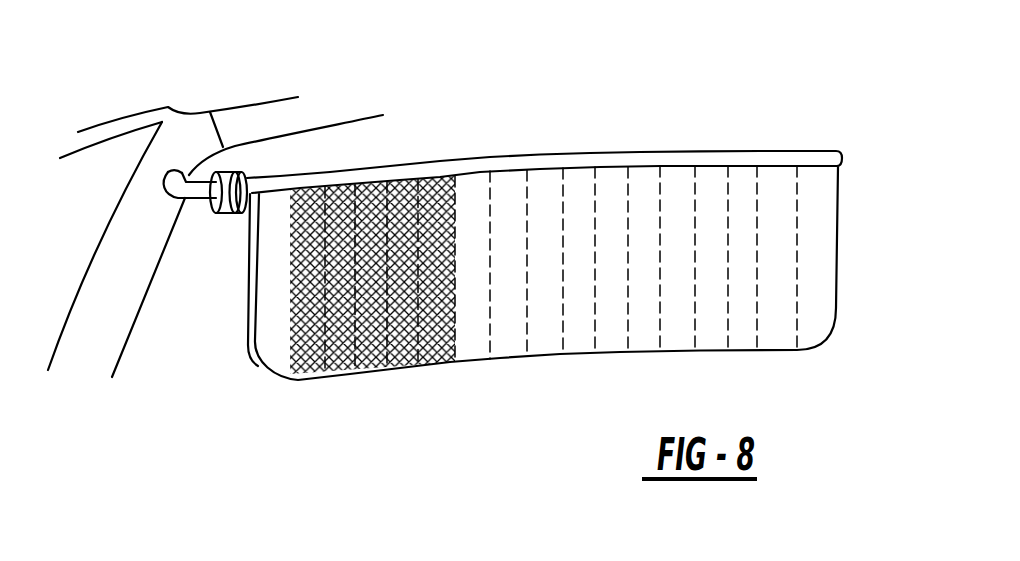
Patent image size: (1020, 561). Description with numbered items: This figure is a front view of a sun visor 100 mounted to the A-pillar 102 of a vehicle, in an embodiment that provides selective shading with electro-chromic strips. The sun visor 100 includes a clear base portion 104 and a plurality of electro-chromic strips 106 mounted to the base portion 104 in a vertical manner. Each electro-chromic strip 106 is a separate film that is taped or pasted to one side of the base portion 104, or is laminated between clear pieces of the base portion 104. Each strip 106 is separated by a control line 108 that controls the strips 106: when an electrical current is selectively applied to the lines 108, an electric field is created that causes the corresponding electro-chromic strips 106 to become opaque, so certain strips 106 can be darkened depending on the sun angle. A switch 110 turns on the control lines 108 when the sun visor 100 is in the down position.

The sun visor 100 is at (562, 250).
The A-pillar 102 is at (130, 227).
The clear base portion 104 is at (563, 297).
The electro-chromic strips 106 is at (505, 343).
The control lines 108 is at (563, 315).
The switch 110 is at (233, 203).